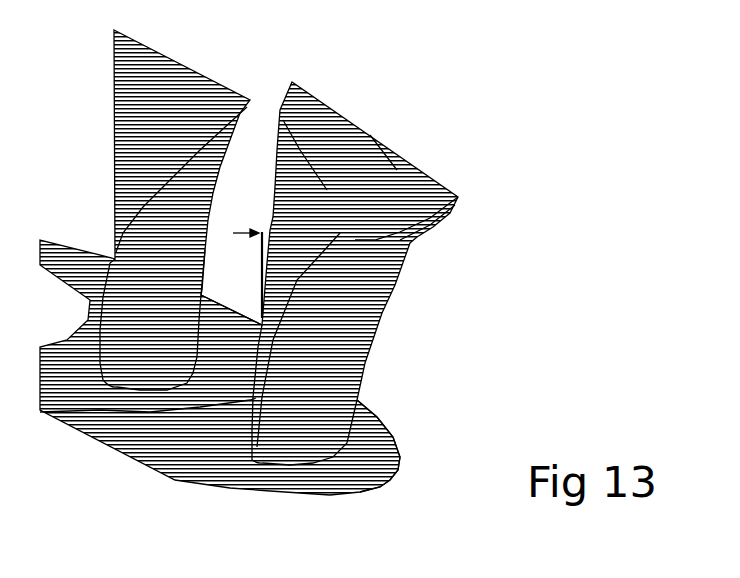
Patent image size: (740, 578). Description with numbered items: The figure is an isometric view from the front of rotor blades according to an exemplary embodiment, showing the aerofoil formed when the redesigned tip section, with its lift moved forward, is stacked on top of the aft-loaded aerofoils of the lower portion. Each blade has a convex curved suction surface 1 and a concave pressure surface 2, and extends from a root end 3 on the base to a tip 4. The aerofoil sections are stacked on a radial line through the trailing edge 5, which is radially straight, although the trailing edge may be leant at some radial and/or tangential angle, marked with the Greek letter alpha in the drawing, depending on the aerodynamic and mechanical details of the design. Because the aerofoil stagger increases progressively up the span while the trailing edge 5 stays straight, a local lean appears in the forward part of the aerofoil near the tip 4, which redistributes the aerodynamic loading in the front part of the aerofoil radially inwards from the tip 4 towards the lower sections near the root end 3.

The suction surface 1 is at (384, 312).
The pressure surface 2 is at (300, 150).
The blade root 3 is at (348, 443).
The tip 4 is at (392, 147).
The trailing edge 5 is at (291, 247).